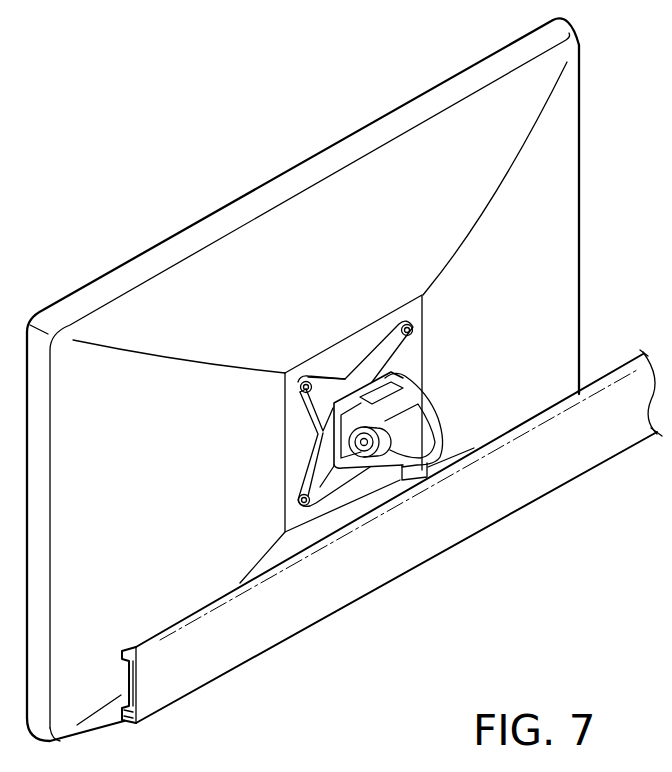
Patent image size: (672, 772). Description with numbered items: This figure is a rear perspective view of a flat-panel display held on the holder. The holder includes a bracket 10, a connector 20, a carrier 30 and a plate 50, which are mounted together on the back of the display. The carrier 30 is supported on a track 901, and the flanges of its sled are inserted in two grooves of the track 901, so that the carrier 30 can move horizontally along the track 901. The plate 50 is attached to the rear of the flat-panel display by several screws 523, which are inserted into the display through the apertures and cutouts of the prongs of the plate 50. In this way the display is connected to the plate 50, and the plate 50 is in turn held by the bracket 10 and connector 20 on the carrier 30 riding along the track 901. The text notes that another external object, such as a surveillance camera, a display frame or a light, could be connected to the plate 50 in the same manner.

The bracket 10 is at (436, 382).
The connector 20 is at (455, 438).
The carrier 30 is at (396, 482).
The plate 50 is at (306, 463).
The screws 523 is at (323, 376).
The track 901 is at (566, 483).